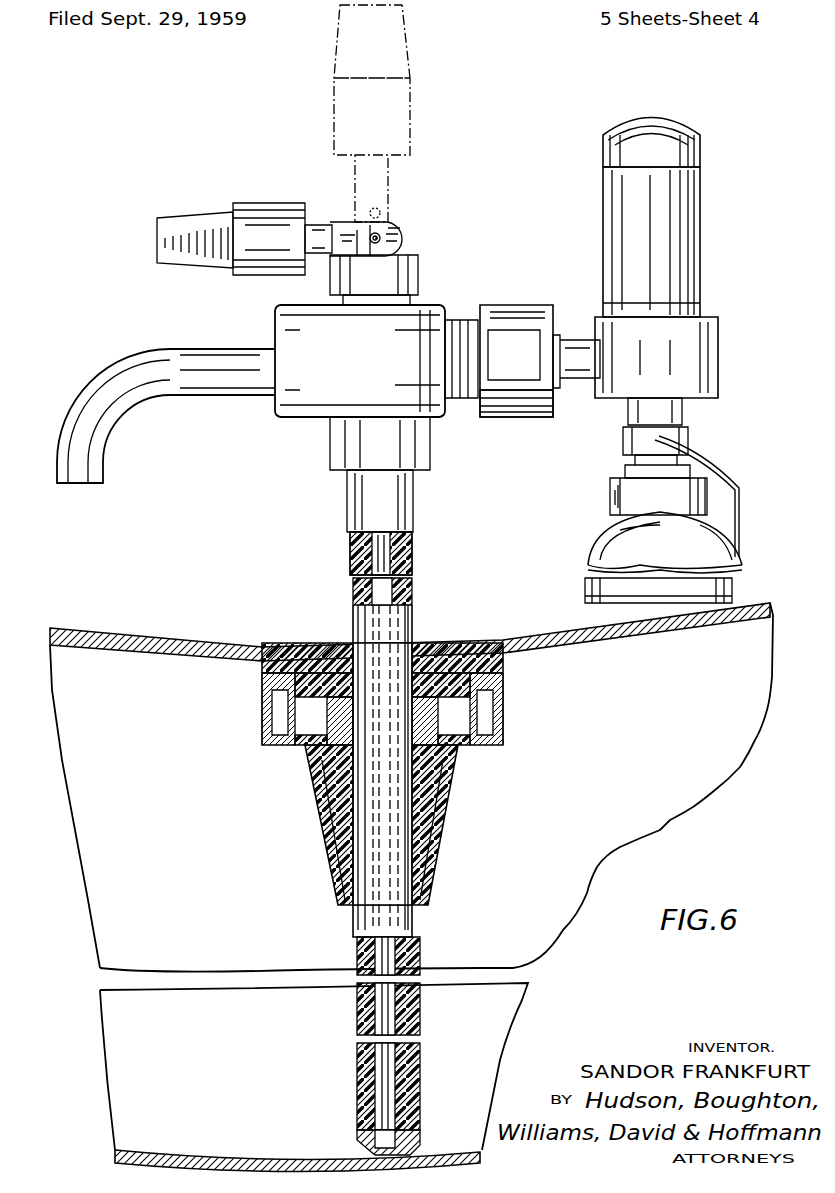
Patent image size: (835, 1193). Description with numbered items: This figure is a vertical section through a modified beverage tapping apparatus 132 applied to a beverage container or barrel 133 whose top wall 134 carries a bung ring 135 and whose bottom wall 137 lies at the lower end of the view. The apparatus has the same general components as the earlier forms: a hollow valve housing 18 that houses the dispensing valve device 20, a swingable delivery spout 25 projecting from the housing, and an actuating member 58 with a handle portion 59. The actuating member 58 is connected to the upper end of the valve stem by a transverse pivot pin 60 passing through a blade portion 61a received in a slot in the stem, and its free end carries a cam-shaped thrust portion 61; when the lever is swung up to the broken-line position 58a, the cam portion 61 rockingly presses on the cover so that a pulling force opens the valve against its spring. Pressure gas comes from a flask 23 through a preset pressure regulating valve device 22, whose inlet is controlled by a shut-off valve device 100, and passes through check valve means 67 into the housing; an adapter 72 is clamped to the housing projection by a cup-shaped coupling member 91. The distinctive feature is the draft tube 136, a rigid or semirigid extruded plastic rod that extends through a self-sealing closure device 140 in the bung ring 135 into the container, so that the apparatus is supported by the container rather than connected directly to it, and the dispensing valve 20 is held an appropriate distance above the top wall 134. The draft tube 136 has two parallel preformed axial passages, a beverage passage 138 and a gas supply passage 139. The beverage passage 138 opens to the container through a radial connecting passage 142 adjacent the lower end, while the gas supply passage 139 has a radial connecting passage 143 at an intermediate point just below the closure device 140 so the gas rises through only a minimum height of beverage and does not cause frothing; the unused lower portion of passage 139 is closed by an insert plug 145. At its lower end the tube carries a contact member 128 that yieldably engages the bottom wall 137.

The valve housing 18 is at (320, 308).
The dispensing valve device 20 is at (355, 400).
The preset pressure regulating valve device 22 is at (703, 243).
The flask 23 is at (592, 548).
The delivery spout 25 is at (181, 325).
The actuating member 58 is at (263, 213).
The elevated broken-line position 58a is at (400, 135).
The handle portion 59 is at (203, 218).
The pivot pin 60 is at (410, 238).
The cam-shaped thrust portion 61 is at (408, 230).
The blade portion 61a is at (338, 230).
The check valve means 67 is at (528, 292).
The adapter 72 is at (557, 335).
The coupling member 91 is at (522, 418).
The shut-off valve device 100 is at (687, 440).
The contact member 128 is at (368, 1152).
The tapping apparatus 132 is at (430, 303).
The beverage container 133 is at (78, 628).
The top wall 134 is at (155, 640).
The bung ring 135 is at (262, 708).
The draft tube 136 is at (350, 625).
The bottom wall 137 is at (195, 1152).
The beverage passage 138 is at (352, 556).
The gas supply passage 139 is at (412, 556).
The self-sealing closure device 140 is at (438, 793).
The radial connecting passage 142 is at (360, 1112).
The connecting passage 143 is at (420, 958).
The insert plug 145 is at (420, 1022).